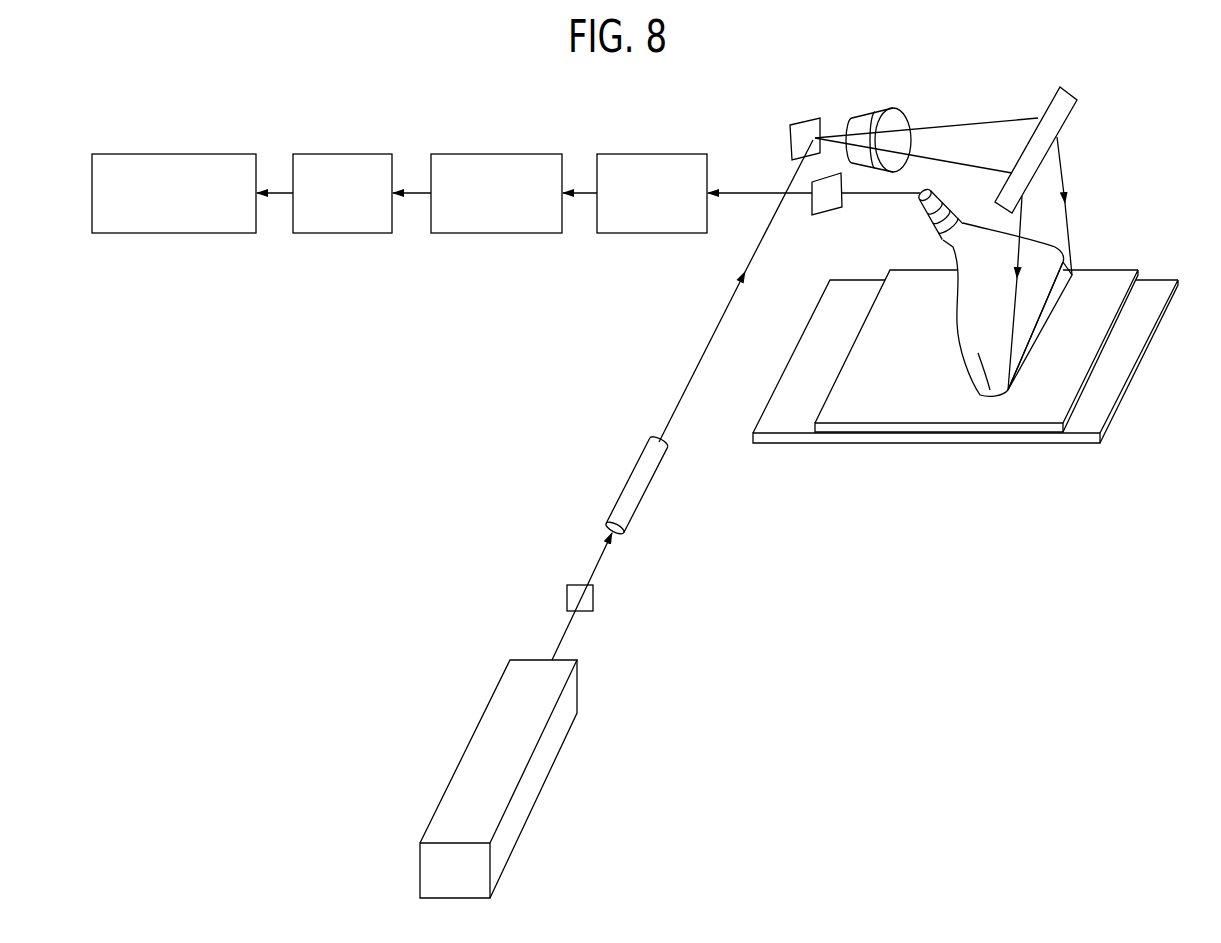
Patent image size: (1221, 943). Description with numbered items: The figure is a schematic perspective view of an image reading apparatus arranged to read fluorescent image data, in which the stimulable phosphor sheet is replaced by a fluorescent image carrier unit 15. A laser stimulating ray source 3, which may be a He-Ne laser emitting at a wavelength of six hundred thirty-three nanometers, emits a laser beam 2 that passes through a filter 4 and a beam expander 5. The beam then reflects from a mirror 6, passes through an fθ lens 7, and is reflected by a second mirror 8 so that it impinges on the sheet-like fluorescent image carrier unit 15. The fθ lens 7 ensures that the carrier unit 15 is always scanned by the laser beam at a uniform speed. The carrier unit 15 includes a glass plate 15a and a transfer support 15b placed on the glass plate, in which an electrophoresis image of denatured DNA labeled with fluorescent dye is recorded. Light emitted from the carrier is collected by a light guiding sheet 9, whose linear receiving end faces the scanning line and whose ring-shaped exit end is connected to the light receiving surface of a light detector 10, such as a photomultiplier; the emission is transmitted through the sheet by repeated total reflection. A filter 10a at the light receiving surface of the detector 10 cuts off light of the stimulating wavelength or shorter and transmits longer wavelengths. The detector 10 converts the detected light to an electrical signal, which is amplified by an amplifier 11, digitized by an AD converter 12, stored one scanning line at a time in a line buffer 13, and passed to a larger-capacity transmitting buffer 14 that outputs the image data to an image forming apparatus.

The laser beam 2 is at (723, 317).
The laser stimulating ray source 3 is at (517, 690).
The filter 4 is at (567, 590).
The beam expander 5 is at (630, 488).
The mirror 6 is at (808, 137).
The fθ lens 7 is at (885, 112).
The mirror 8 is at (1055, 112).
The light guiding sheet 9 is at (983, 397).
The light detector 10 is at (920, 210).
The filter 10a is at (823, 213).
The amplifier 11 is at (663, 153).
The AD converter 12 is at (498, 153).
The line buffer 13 is at (345, 153).
The transmitting buffer 14 is at (193, 153).
The fluorescent image carrier unit 15 is at (977, 364).
The glass plate 15a is at (1125, 270).
The transfer support 15b is at (1117, 410).